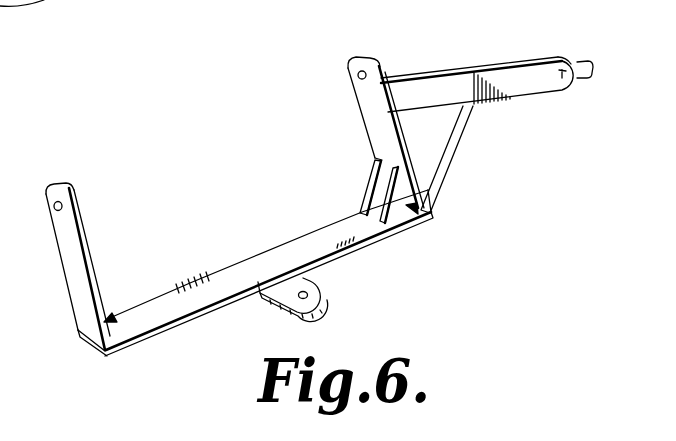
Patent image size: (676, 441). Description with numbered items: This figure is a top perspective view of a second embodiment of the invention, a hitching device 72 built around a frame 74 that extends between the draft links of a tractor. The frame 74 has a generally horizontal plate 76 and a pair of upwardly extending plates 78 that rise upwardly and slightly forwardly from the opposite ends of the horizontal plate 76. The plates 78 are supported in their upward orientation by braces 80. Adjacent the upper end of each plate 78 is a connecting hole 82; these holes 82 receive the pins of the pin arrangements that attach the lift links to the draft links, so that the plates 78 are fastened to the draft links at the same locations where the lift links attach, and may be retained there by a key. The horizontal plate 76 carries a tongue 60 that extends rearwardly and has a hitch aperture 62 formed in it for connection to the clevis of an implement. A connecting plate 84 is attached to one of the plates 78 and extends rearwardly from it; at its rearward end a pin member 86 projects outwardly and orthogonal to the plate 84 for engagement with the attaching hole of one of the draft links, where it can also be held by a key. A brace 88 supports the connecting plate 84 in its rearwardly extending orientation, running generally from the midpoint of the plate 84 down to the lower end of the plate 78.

The hitching device 72 is at (414, 62).
The frame 74 is at (171, 340).
The horizontal plate 76 is at (291, 248).
The upwardly extending plate 78 is at (75, 285).
The brace 80 is at (368, 182).
The connecting hole 82 is at (52, 211).
The connecting plate 84 is at (522, 93).
The pin member 86 is at (583, 62).
The brace 88 is at (446, 158).
The tongue 60 is at (275, 299).
The hitch aperture 62 is at (306, 292).